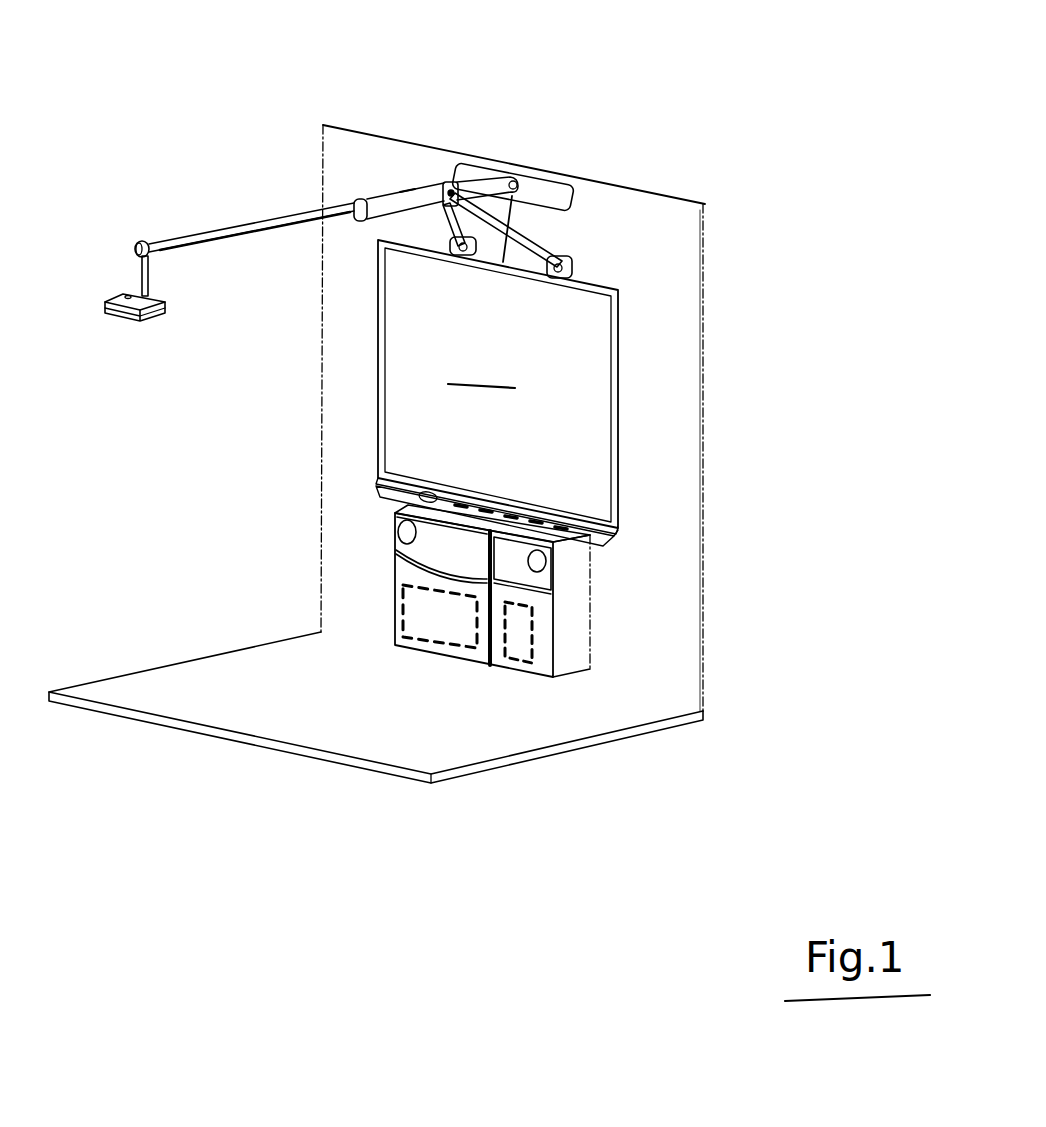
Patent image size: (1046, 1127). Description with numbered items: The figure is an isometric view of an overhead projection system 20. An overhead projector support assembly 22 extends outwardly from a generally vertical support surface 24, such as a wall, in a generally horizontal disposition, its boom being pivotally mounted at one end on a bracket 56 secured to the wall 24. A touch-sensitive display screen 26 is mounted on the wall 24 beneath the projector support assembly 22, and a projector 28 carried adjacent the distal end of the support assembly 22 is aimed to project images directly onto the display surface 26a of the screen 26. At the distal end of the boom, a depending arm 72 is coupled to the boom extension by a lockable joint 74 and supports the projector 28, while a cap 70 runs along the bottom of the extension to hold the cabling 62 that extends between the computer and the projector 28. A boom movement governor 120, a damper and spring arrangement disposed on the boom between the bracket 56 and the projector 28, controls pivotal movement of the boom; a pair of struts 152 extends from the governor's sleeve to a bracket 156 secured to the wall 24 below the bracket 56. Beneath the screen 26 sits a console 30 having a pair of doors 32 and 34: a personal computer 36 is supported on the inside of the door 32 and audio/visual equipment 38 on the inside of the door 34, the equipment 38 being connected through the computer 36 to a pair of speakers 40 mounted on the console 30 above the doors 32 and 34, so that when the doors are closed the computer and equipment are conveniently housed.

The overhead projection system 20 is at (682, 116).
The overhead projector support assembly 22 is at (262, 293).
The generally vertical support surface 24 is at (686, 397).
The touch-sensitive display screen 26 is at (576, 393).
The display surface 26a is at (481, 368).
The projector 28 is at (118, 316).
The console 30 is at (514, 609).
The door 32 is at (404, 566).
The door 34 is at (542, 665).
The personal computer 36 is at (428, 641).
The audio/visual equipment 38 is at (517, 655).
The speakers 40 is at (413, 531).
The bracket 56 is at (547, 190).
The cabling 62 is at (521, 209).
The cap 70 is at (208, 240).
The depending arm 72 is at (150, 279).
The lockable joint 74 is at (146, 243).
The boom movement governor 120 is at (410, 168).
The struts 152 is at (568, 256).
The bracket 156 is at (570, 264).